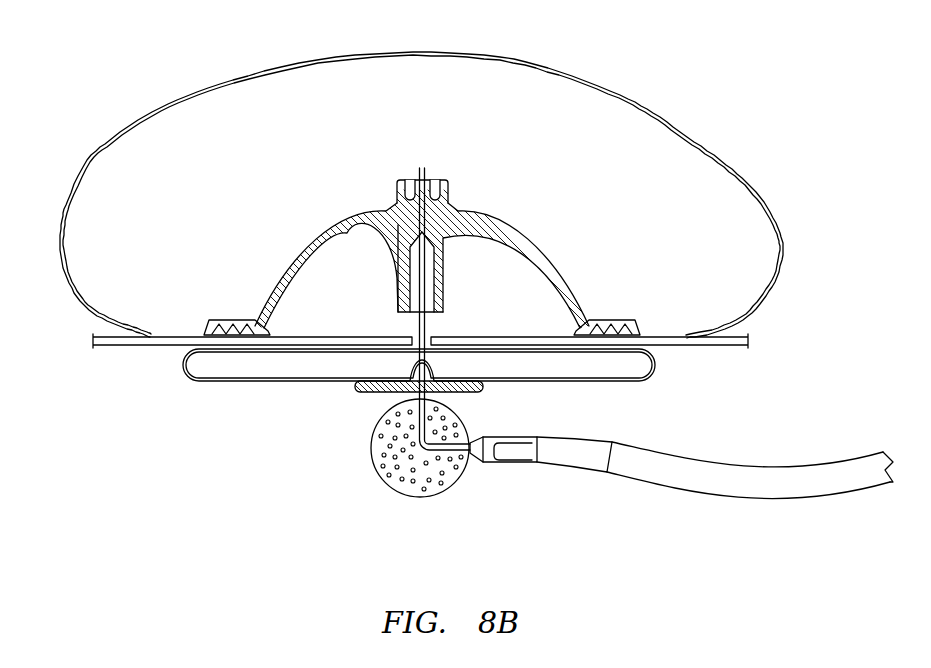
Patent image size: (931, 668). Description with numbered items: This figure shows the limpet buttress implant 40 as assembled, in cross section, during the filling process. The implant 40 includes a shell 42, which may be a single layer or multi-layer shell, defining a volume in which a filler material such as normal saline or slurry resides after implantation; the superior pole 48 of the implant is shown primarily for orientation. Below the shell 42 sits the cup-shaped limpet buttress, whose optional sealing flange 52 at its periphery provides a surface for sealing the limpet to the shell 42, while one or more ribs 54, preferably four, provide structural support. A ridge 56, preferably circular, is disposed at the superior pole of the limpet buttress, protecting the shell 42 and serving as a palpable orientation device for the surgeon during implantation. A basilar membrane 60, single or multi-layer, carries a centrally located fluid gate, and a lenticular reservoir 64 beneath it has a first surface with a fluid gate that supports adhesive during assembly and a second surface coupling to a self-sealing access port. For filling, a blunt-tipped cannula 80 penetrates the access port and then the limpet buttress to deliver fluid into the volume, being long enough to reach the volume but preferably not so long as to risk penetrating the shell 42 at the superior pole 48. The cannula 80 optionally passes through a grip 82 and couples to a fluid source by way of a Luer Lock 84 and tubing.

The implant 40 is at (146, 96).
The shell 42 is at (88, 308).
The superior pole 48 is at (467, 52).
The sealing flange 52 is at (222, 320).
The ribs 54 is at (378, 238).
The ridge 56 is at (442, 196).
The basilar membrane 60 is at (722, 350).
The lenticular reservoir 64 is at (160, 377).
The cannula 80 is at (420, 172).
The grip 82 is at (388, 458).
The Luer Lock 84 is at (488, 463).